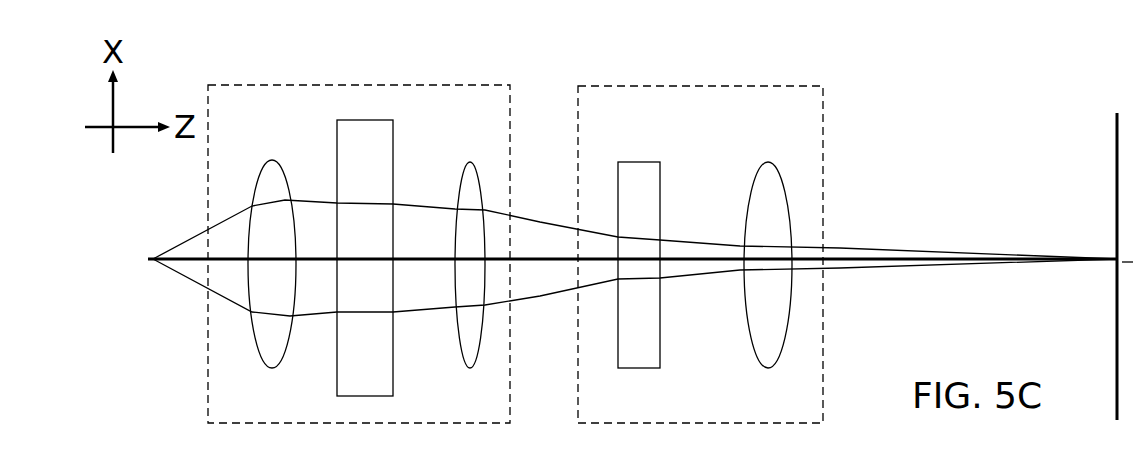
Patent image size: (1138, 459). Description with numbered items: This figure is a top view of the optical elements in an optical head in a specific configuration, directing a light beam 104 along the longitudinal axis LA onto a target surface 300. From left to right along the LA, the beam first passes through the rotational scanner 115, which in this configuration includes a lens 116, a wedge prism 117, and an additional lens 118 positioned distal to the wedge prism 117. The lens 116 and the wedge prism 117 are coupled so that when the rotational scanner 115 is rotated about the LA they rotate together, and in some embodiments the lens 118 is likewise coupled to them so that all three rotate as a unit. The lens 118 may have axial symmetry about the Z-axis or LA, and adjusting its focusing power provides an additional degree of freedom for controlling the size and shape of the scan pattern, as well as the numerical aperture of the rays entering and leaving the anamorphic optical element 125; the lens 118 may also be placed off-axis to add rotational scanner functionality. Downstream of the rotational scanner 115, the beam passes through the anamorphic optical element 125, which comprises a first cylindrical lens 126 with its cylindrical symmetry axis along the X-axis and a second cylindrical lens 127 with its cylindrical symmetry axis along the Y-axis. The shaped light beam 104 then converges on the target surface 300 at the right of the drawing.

The light beam 104 is at (942, 262).
The longitudinal axis LA is at (1022, 258).
The rotational scanner 115 is at (232, 129).
The lens 116 is at (263, 340).
The wedge prism 117 is at (337, 323).
The lens 118 is at (472, 182).
The anamorphic optical element 125 is at (665, 129).
The first cylindrical lens 126 is at (643, 358).
The second cylindrical lens 127 is at (758, 345).
The target surface 300 is at (1115, 155).